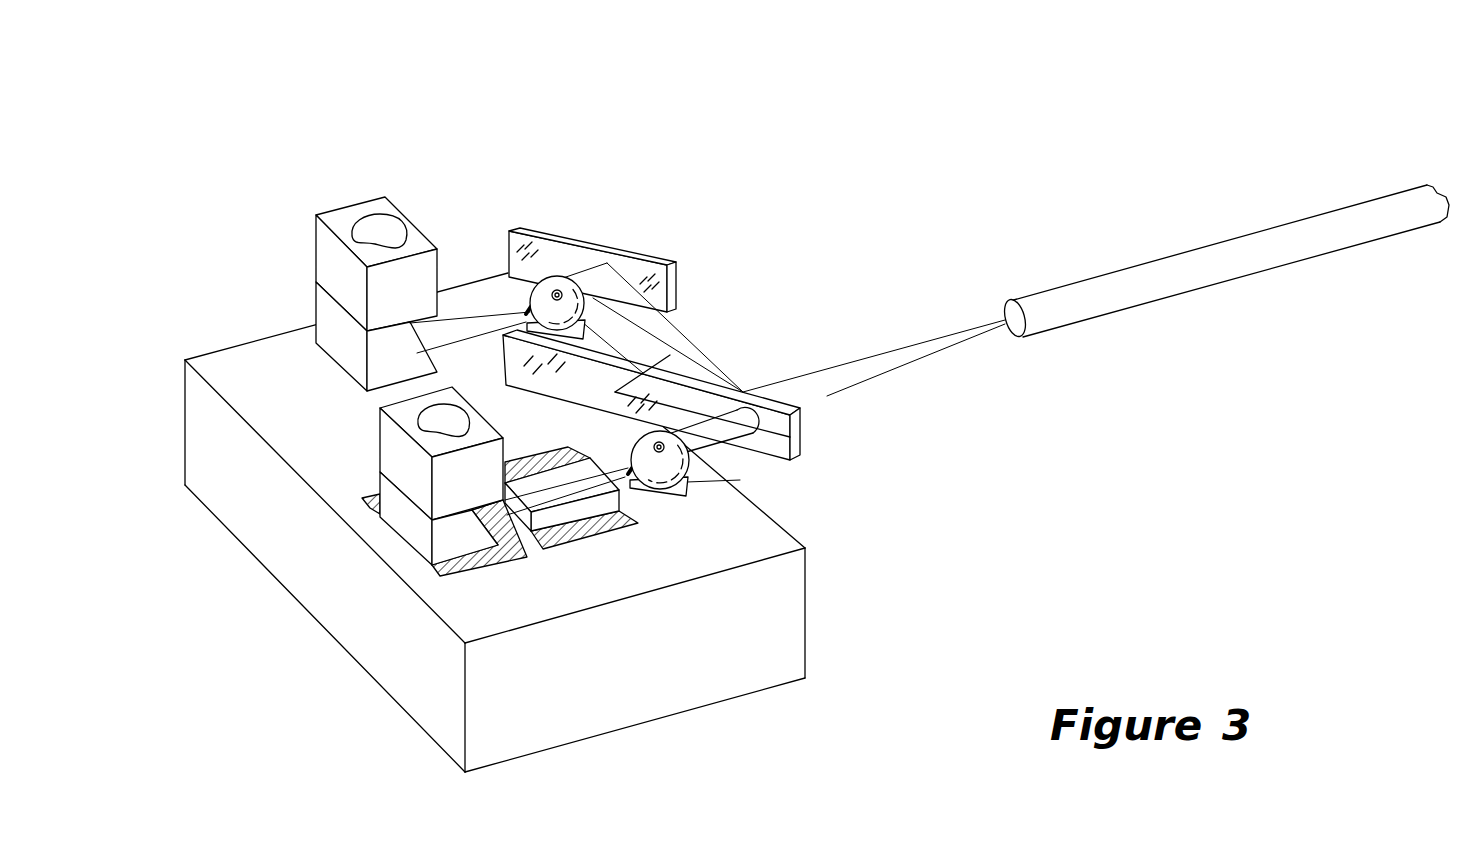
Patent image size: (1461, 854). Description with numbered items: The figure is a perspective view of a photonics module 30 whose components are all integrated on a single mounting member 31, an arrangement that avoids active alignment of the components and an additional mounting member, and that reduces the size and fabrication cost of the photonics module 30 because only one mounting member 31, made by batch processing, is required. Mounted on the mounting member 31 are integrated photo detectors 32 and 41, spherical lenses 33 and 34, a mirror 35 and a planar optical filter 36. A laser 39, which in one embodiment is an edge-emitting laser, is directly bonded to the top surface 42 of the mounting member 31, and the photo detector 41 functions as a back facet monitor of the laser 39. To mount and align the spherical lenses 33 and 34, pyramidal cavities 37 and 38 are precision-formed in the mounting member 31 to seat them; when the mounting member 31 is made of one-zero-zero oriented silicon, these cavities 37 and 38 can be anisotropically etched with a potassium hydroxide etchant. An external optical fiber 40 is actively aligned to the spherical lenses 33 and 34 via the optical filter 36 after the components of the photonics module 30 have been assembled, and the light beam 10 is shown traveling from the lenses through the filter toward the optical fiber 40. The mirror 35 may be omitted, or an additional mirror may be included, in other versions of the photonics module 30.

The light beam 10 is at (670, 355).
The photonics module 30 is at (856, 113).
The mounting member 31 is at (185, 445).
The photo detector 32 is at (335, 212).
The spherical lens 33 is at (548, 272).
The spherical lens 34 is at (740, 480).
The mirror 35 is at (637, 253).
The planar optical filter 36 is at (790, 460).
The pyramidal cavity 37 is at (627, 318).
The pyramidal cavity 38 is at (687, 494).
The laser 39 is at (580, 510).
The external optical fiber 40 is at (1165, 258).
The photo detector 41 is at (380, 442).
The top surface 42 is at (265, 380).